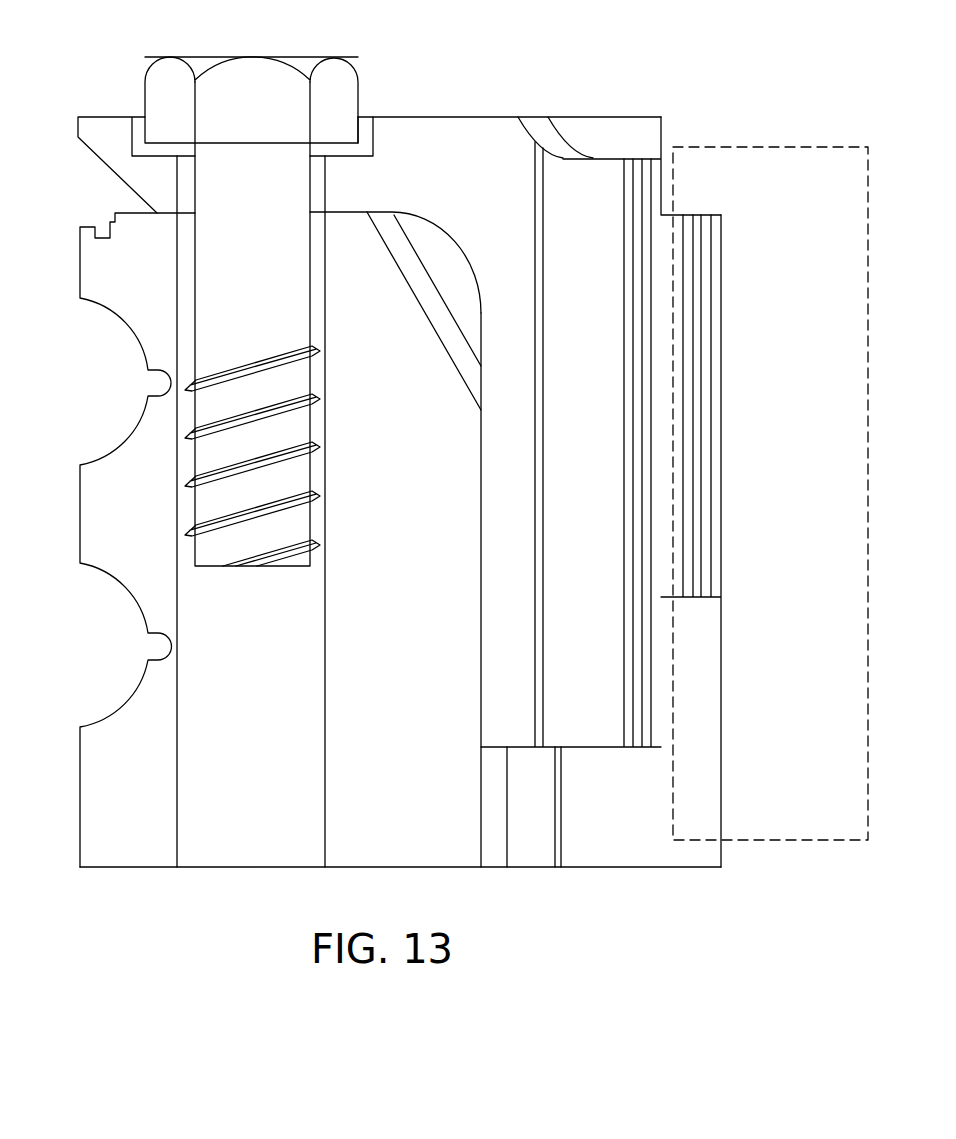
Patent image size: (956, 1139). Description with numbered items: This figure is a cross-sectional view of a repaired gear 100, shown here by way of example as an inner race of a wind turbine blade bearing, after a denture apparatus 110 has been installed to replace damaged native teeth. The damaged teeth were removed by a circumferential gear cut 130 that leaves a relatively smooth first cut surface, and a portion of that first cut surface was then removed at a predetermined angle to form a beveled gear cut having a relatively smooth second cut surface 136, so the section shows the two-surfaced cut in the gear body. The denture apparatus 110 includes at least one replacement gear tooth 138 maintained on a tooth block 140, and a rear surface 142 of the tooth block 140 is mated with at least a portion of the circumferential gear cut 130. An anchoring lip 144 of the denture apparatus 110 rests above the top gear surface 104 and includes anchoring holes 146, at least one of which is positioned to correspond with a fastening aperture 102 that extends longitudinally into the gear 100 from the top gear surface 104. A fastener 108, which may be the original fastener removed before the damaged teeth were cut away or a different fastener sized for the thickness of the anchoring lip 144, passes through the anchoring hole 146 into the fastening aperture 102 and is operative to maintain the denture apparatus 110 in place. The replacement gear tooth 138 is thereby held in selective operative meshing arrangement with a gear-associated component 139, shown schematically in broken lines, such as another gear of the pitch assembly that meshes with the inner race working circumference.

The gear 100 is at (102, 894).
The fastening aperture 102 is at (248, 845).
The top gear surface 104 is at (125, 213).
The fastener 108 is at (252, 56).
The denture apparatus 110 is at (681, 122).
The circumferential gear cut 130 is at (481, 497).
The second cut surface 136 is at (422, 312).
The replacement gear tooth 138 is at (661, 680).
The gear-associated component 139 is at (812, 147).
The tooth block 140 is at (587, 777).
The rear surface 142 is at (482, 680).
The anchoring lip 144 is at (472, 168).
The anchoring hole 146 is at (366, 128).